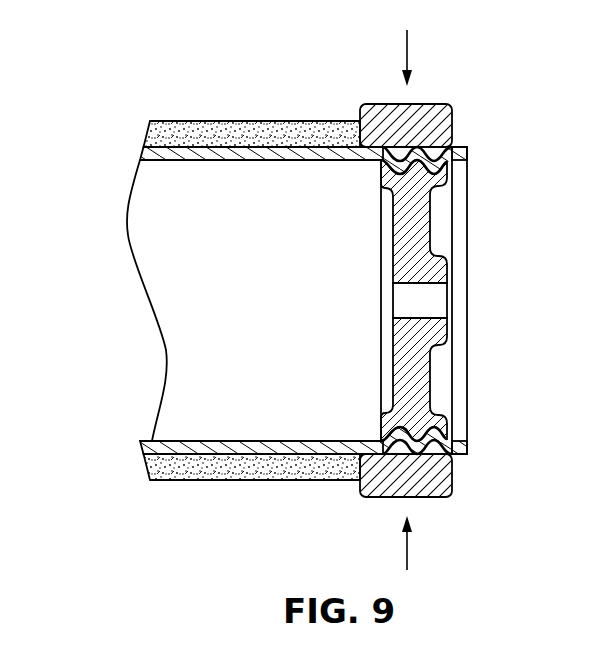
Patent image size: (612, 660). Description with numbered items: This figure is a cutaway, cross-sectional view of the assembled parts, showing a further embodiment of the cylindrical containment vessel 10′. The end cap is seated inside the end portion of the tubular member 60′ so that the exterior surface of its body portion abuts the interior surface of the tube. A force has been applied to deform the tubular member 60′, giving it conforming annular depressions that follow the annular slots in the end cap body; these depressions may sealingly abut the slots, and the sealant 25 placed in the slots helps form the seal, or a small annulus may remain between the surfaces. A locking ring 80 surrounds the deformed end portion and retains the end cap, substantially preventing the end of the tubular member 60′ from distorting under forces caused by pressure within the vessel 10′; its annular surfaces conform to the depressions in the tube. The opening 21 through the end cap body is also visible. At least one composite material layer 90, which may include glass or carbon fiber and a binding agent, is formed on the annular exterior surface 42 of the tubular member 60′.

The cylindrical containment vessel 10′ is at (225, 80).
The tubular member 60′ is at (130, 152).
The composite material layer 90 is at (192, 138).
The annular exterior surface 42 is at (224, 150).
The locking ring 80 is at (440, 116).
The opening in end cap 21 is at (421, 302).
The sealing ridges 25 is at (402, 449).